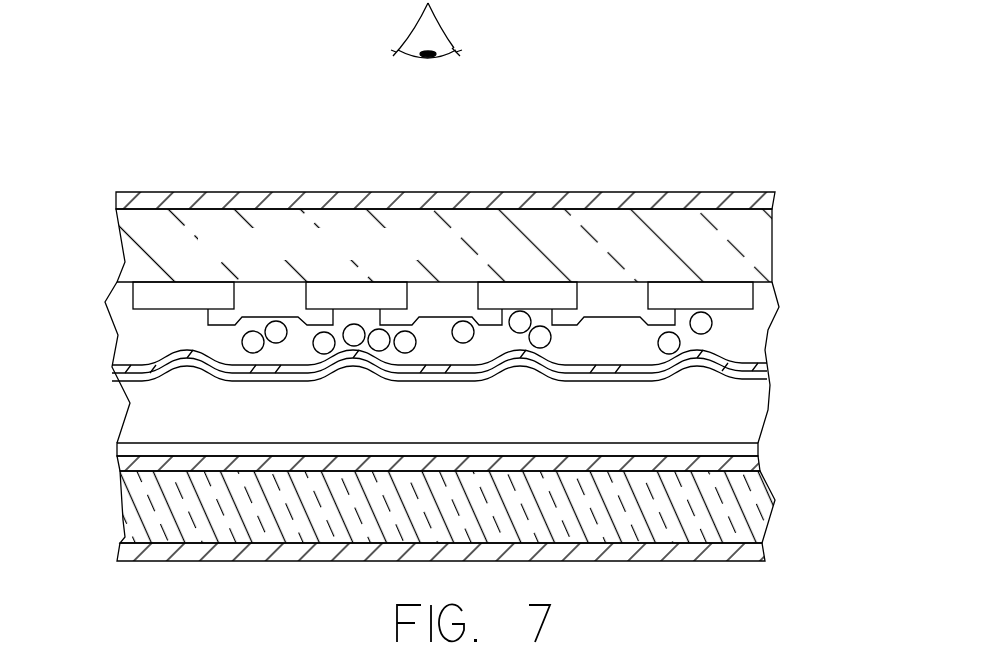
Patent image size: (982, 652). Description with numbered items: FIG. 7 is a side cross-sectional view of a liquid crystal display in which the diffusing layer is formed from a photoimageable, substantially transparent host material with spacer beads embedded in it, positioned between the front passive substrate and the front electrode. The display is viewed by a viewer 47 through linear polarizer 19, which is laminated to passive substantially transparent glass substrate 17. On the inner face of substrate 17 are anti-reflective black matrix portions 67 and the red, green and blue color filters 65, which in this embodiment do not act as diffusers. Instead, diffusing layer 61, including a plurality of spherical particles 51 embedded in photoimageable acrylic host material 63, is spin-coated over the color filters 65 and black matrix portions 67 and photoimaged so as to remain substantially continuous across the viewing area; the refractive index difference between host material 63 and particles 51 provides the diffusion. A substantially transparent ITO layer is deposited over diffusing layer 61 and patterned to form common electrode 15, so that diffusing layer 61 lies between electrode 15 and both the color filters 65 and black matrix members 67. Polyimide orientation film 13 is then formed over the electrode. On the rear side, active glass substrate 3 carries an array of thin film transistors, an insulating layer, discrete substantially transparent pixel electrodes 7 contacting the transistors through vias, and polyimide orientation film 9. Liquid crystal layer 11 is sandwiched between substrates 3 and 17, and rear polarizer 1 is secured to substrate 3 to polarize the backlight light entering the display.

The viewer 47 is at (437, 13).
The linear polarizer 19 is at (758, 193).
The passive substantially transparent glass substrate 17 is at (748, 226).
The black matrix portions 67 is at (493, 288).
The color filters 65 is at (288, 285).
The common electrode 15 is at (705, 353).
The polyimide orientation film 13 is at (735, 368).
The liquid crystal layer 11 is at (748, 418).
The polyimide orientation film 9 is at (748, 448).
The pixel electrodes 7 is at (117, 460).
The active substantially transparent glass substrate 3 is at (748, 502).
The rear polarizer 1 is at (753, 558).
The spherical particles 51 is at (379, 340).
The diffusing layer 61 is at (147, 333).
The host material 63 is at (432, 355).